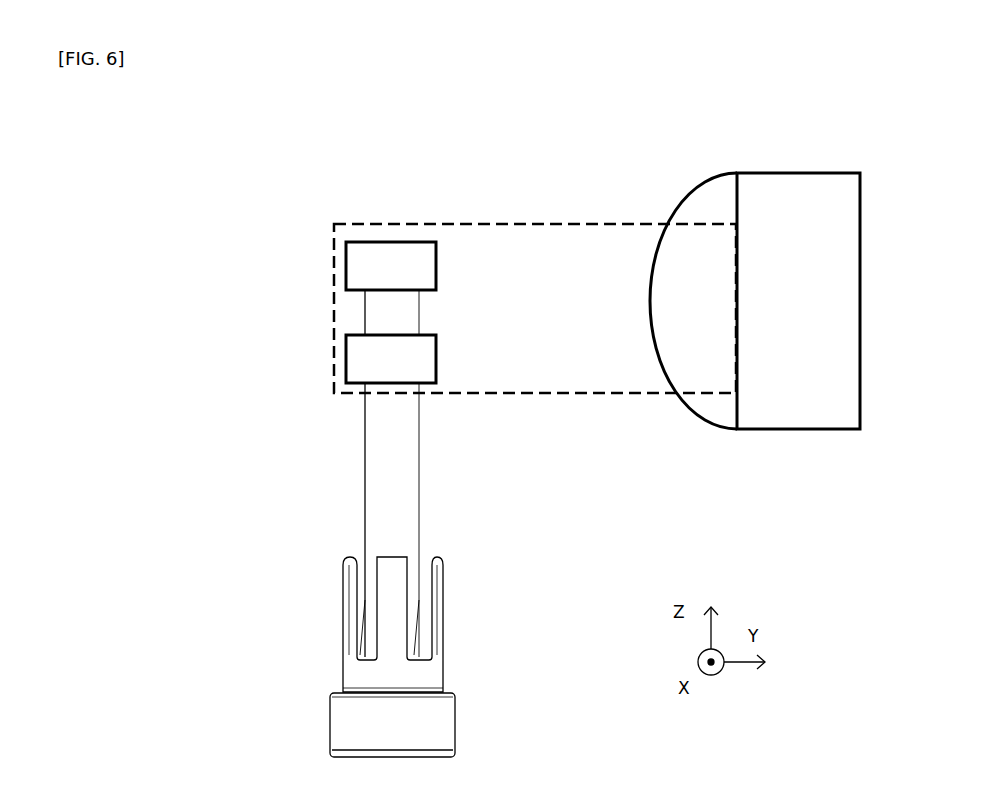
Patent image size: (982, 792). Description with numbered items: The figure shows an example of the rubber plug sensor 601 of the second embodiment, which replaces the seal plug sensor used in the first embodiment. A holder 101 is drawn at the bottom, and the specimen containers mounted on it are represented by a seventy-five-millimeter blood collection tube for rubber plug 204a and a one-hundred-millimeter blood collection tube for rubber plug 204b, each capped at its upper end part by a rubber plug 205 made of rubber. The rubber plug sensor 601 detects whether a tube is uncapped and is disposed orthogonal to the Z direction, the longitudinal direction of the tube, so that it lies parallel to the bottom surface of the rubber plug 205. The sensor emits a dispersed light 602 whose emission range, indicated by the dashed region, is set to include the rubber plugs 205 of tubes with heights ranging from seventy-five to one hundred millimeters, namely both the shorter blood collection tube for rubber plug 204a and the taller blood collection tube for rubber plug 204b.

The holder 101 is at (428, 677).
The 75-mm blood collection tube for rubber plug 204a is at (390, 440).
The 100-mm blood collection tube for rubber plug 204b is at (378, 318).
The rubber plug 205 is at (380, 255).
The rubber plug sensor 601 is at (795, 203).
The dispersed light 602 is at (535, 268).